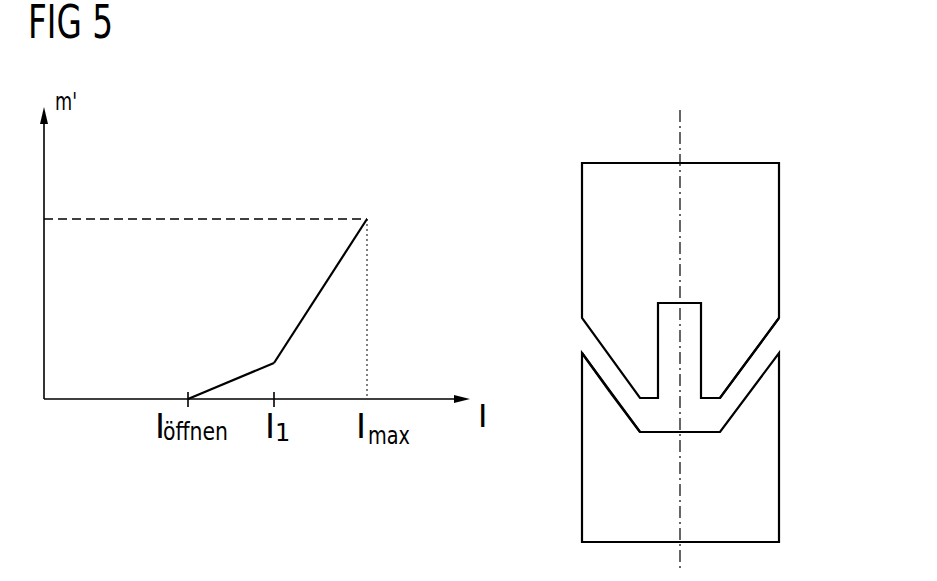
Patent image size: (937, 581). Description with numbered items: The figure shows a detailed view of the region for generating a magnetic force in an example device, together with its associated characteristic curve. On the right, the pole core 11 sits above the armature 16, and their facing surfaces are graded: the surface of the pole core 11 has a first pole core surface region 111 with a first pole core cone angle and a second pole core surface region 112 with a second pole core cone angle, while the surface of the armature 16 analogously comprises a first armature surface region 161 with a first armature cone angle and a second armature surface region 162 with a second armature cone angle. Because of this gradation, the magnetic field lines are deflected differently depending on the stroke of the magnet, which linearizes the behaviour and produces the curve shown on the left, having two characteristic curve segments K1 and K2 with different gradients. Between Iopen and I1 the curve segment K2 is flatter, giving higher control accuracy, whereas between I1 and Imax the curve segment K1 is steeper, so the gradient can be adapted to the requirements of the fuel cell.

The pole core 11 is at (758, 243).
The first pole core surface region 111 is at (733, 368).
The second pole core surface region 112 is at (763, 333).
The armature 16 is at (758, 473).
The first armature surface region 161 is at (628, 413).
The second armature surface region 162 is at (600, 370).
The characteristic curve segment K1 is at (328, 277).
The characteristic curve segment K2 is at (238, 380).